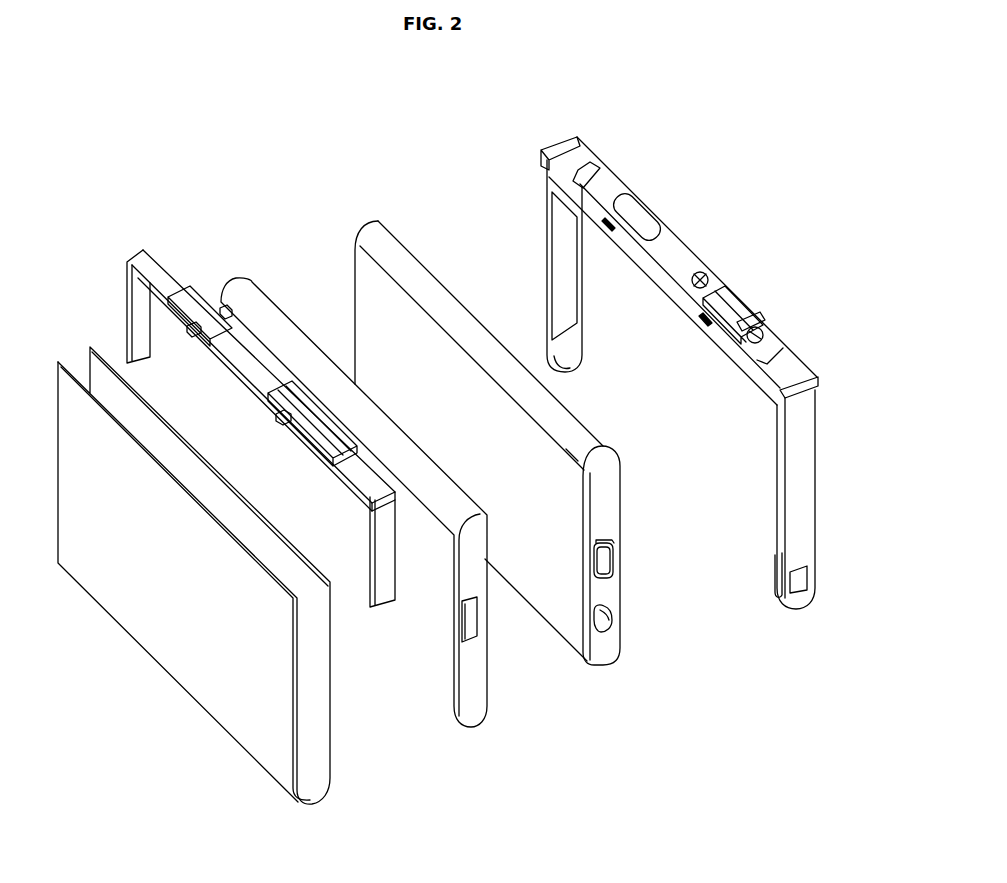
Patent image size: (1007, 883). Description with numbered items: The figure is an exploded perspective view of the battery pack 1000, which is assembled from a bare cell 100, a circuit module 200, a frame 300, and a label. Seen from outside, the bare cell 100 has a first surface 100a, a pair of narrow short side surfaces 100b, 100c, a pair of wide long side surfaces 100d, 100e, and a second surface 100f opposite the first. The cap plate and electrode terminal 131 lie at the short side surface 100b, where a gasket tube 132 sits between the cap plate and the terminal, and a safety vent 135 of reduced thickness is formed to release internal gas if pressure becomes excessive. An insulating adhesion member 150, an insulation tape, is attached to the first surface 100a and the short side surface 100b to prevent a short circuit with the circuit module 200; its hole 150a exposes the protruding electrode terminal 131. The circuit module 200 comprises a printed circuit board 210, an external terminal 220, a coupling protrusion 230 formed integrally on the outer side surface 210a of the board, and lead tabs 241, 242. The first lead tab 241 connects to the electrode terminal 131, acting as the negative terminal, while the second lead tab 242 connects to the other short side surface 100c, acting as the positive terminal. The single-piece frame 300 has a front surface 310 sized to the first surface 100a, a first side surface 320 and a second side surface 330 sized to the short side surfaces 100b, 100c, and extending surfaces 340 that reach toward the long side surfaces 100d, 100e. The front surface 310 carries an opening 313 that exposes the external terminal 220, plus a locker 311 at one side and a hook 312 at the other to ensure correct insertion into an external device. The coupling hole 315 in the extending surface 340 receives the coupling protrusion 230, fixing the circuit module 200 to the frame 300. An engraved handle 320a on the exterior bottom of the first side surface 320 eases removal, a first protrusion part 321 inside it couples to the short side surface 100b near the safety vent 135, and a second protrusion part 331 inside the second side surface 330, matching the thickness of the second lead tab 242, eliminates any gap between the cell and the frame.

The battery pack 1000 is at (98, 109).
The bare cell 100 is at (361, 214).
The first surface 100a is at (400, 258).
The short side surface 100b is at (605, 650).
The short side surface 100c is at (355, 265).
The long side surface 100d is at (395, 312).
The long side surface 100e is at (466, 298).
The second surface 100f is at (512, 592).
The electrode terminal 131 is at (618, 553).
The gasket tube 132 is at (612, 545).
The safety vent 135 is at (614, 612).
The insulating adhesion member 150 is at (286, 332).
The hole 150a is at (467, 628).
The circuit module 200 is at (200, 286).
The printed circuit board 210 is at (240, 353).
The outer side surface 210a is at (318, 468).
The external terminal 220 is at (264, 400).
The coupling protrusion 230 is at (280, 424).
The first lead tab 241 is at (382, 594).
The second lead tab 242 is at (140, 262).
The frame 300 is at (554, 128).
The front surface 310 is at (615, 178).
The locker 311 is at (795, 355).
The hook 312 is at (580, 162).
The opening 313 is at (730, 290).
The coupling hole 315 is at (745, 303).
The first side surface 320 is at (808, 430).
The handle 320a is at (807, 590).
The first protrusion part 321 is at (773, 587).
The second side surface 330 is at (545, 190).
The second protrusion part 331 is at (585, 356).
The extending surface 340 is at (548, 232).